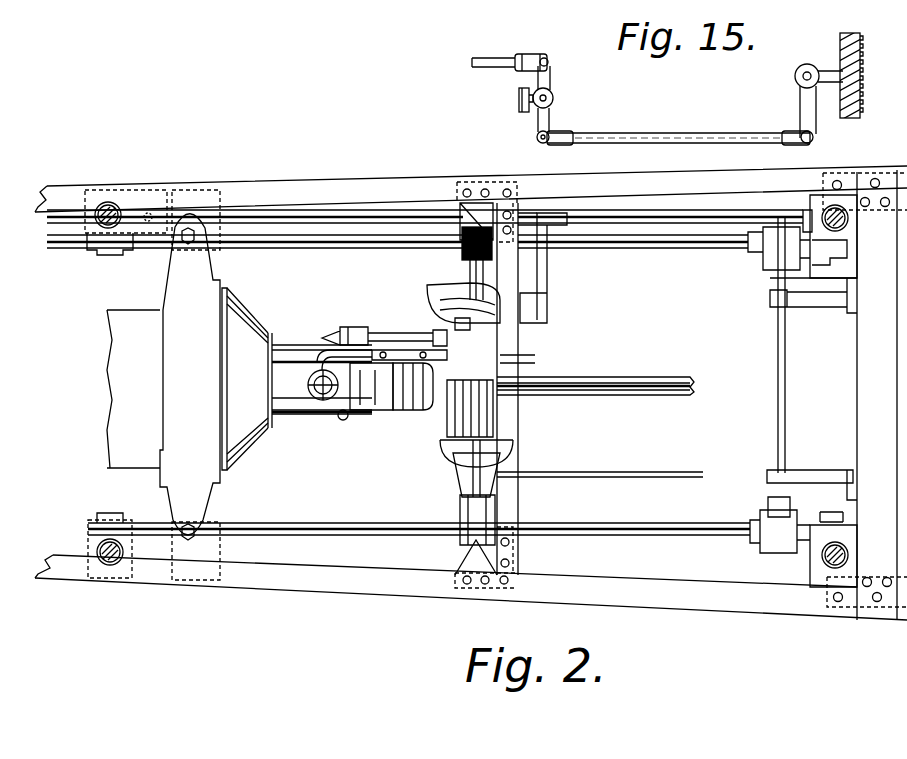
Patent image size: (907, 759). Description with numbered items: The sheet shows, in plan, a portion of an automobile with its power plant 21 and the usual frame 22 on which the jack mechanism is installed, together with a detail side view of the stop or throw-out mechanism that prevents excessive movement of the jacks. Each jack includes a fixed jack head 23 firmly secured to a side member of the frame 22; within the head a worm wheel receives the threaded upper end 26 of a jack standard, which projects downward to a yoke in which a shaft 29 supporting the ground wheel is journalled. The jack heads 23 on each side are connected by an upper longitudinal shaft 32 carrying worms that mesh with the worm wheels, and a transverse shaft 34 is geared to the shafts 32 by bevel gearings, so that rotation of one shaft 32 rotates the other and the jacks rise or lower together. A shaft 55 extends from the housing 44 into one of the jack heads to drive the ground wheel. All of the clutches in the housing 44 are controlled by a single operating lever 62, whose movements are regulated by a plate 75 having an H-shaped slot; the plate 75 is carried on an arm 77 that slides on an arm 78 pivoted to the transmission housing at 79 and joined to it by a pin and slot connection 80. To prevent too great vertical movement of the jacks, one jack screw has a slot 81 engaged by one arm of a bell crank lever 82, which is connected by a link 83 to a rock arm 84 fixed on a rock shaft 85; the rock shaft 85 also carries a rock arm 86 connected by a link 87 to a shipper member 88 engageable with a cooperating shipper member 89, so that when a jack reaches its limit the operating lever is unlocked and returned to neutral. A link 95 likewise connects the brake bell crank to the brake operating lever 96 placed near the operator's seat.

In FIG. 2, the power plant 21 is at (130, 355).
In FIG. 2, the frame 22 is at (337, 190).
In FIG. 2, the jack head 23 is at (112, 523).
In FIG. 15, the threaded upper end of jack standard 26 is at (855, 78).
In FIG. 2, the threaded upper end of jack standard 26 is at (100, 222).
In FIG. 2, the shaft 29 is at (205, 222).
In FIG. 2, the upper longitudinal shaft 32 is at (347, 247).
In FIG. 2, the transverse shaft 34 is at (778, 373).
In FIG. 2, the housing 44 is at (520, 430).
In FIG. 2, the shaft 55 is at (370, 215).
In FIG. 2, the operating lever 62 is at (520, 400).
In FIG. 2, the plate 75 is at (477, 370).
In FIG. 2, the arm 77 is at (457, 363).
In FIG. 2, the arm 78 is at (407, 360).
In FIG. 2, the pivot 79 is at (347, 397).
In FIG. 2, the pin and slot connection 80 is at (310, 370).
In FIG. 15, the slot 81 is at (840, 60).
In FIG. 15, the bell crank lever 82 is at (805, 100).
In FIG. 15, the link 83 is at (651, 121).
In FIG. 2, the link 83 is at (713, 220).
In FIG. 15, the rock arm 84 is at (547, 120).
In FIG. 15, the rock shaft 85 is at (551, 96).
In FIG. 2, the rock shaft 85 is at (548, 275).
In FIG. 15, the rock arm 86 is at (545, 80).
In FIG. 15, the link 87 is at (490, 60).
In FIG. 2, the shipper member 88 is at (433, 303).
In FIG. 2, the cooperating shipper member 89 is at (520, 363).
In FIG. 2, the link 95 is at (420, 322).
In FIG. 2, the brake operating lever 96 is at (340, 327).